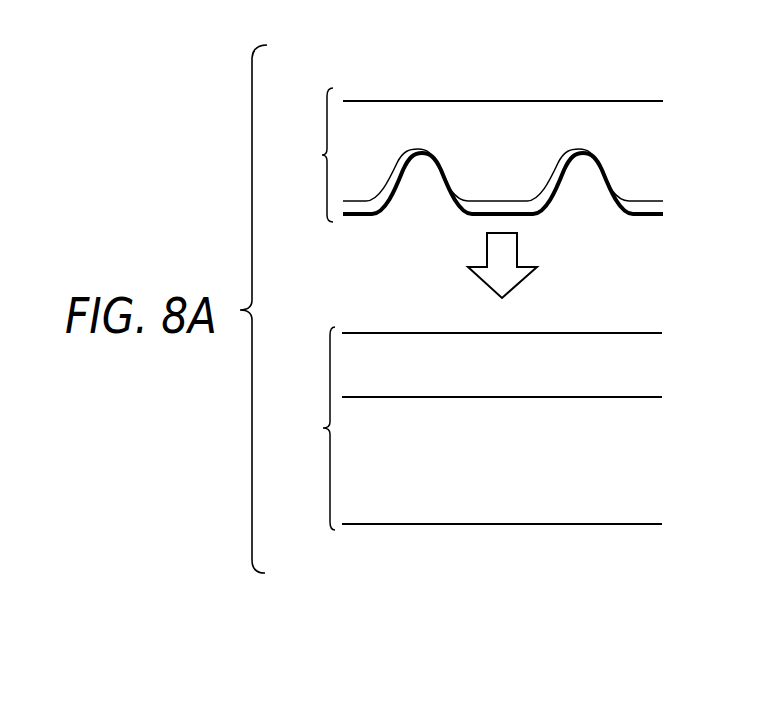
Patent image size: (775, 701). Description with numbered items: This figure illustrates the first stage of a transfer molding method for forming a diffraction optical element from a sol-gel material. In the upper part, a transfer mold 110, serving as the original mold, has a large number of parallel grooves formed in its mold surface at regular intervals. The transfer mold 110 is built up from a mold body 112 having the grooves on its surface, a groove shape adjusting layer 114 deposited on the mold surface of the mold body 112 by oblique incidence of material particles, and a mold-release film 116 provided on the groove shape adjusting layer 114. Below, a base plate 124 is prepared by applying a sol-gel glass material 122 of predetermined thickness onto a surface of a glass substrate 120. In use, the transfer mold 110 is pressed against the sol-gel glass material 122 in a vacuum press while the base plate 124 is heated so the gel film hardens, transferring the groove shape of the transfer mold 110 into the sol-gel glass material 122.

The transfer mold 110 is at (471, 155).
The mold body 112 is at (583, 112).
The groove shape adjusting layer 114 is at (383, 205).
The mold-release film 116 is at (557, 202).
The glass substrate 120 is at (636, 511).
The sol-gel glass material 122 is at (592, 345).
The base plate 124 is at (470, 428).